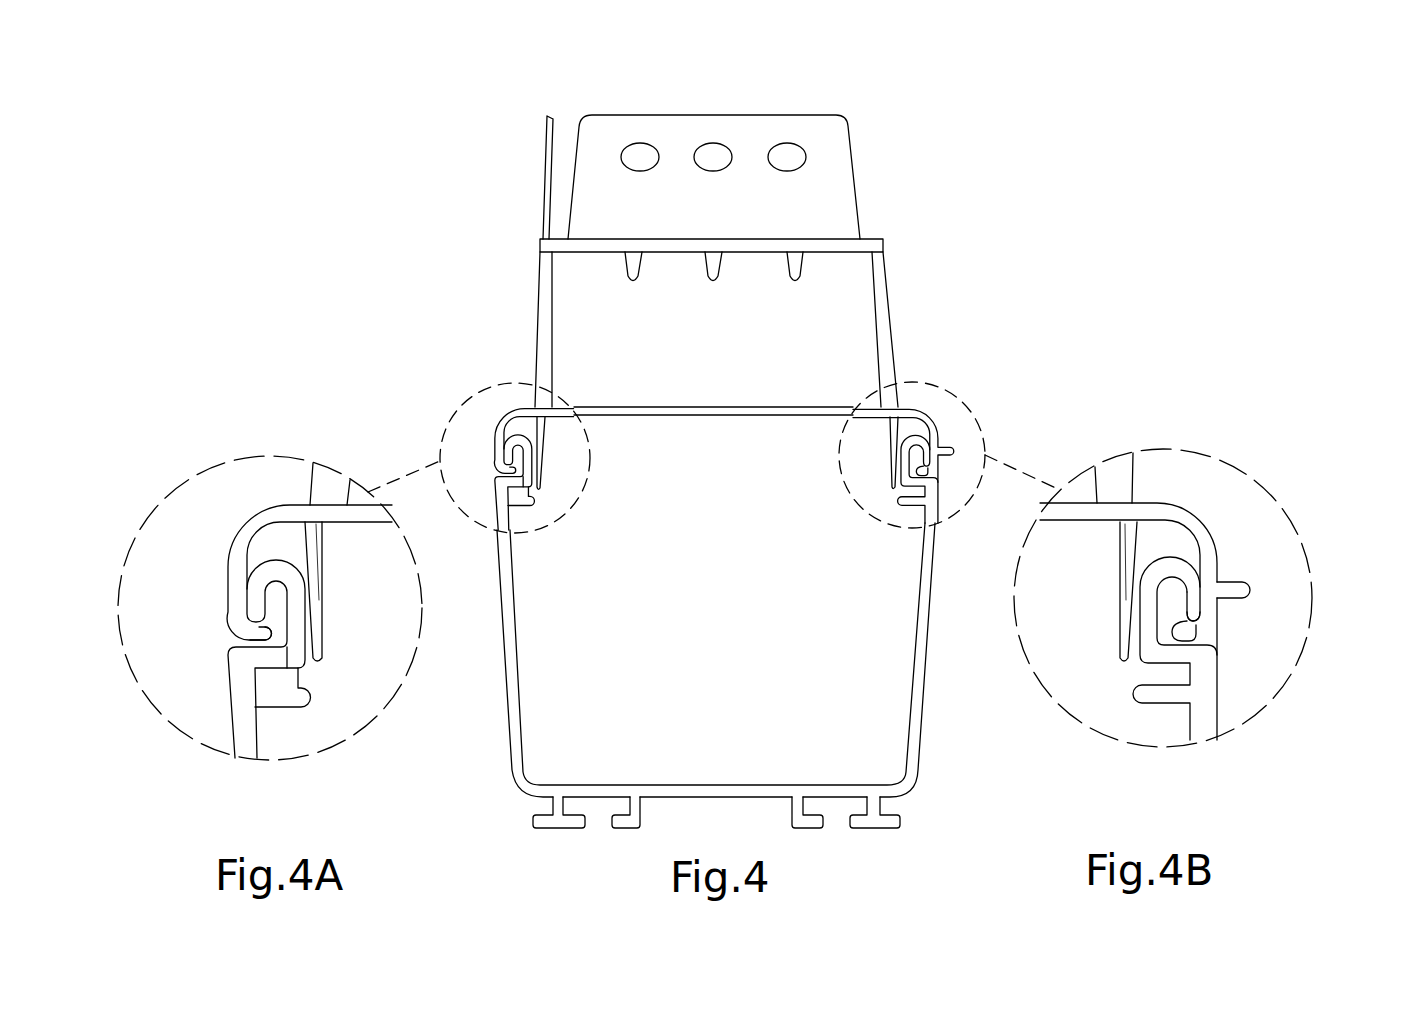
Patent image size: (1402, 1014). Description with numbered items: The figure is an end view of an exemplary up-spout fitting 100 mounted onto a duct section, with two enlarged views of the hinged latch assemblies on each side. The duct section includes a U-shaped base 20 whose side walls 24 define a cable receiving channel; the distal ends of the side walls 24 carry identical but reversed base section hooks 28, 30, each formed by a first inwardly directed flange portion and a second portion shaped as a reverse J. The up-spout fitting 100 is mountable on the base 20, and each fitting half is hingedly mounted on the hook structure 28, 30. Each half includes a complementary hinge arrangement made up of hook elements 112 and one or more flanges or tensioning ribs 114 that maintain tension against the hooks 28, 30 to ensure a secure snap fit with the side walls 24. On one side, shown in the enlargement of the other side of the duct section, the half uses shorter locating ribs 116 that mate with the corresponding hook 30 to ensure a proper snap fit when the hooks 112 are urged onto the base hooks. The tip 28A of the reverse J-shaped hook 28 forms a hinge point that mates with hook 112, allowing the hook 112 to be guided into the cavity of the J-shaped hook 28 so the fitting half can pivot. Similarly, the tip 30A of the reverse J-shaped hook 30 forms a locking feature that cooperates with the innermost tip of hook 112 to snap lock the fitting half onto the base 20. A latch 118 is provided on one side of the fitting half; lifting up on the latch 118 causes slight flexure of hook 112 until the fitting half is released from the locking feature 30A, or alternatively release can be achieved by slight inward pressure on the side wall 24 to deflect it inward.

In FIG. 4, the up-spout fitting 100 is at (920, 148).
In FIG. 4, the U-shaped base 20 is at (942, 713).
In FIG. 4B, the side walls 24 is at (1212, 697).
In FIG. 4A, the base section hook 28 is at (302, 668).
In FIG. 4A, the tip of reverse J-shaped hook 28A is at (236, 618).
In FIG. 4B, the base section hook 30 is at (1138, 628).
In FIG. 4B, the tip of reverse J-shaped hook 30A is at (1206, 620).
In FIG. 4A, the hook element 112 is at (255, 633).
In FIG. 4B, the hook element 112 is at (1183, 633).
In FIG. 4A, the tensioning rib 114 is at (322, 600).
In FIG. 4B, the locating rib 116 is at (1115, 590).
In FIG. 4B, the latch 118 is at (1248, 588).